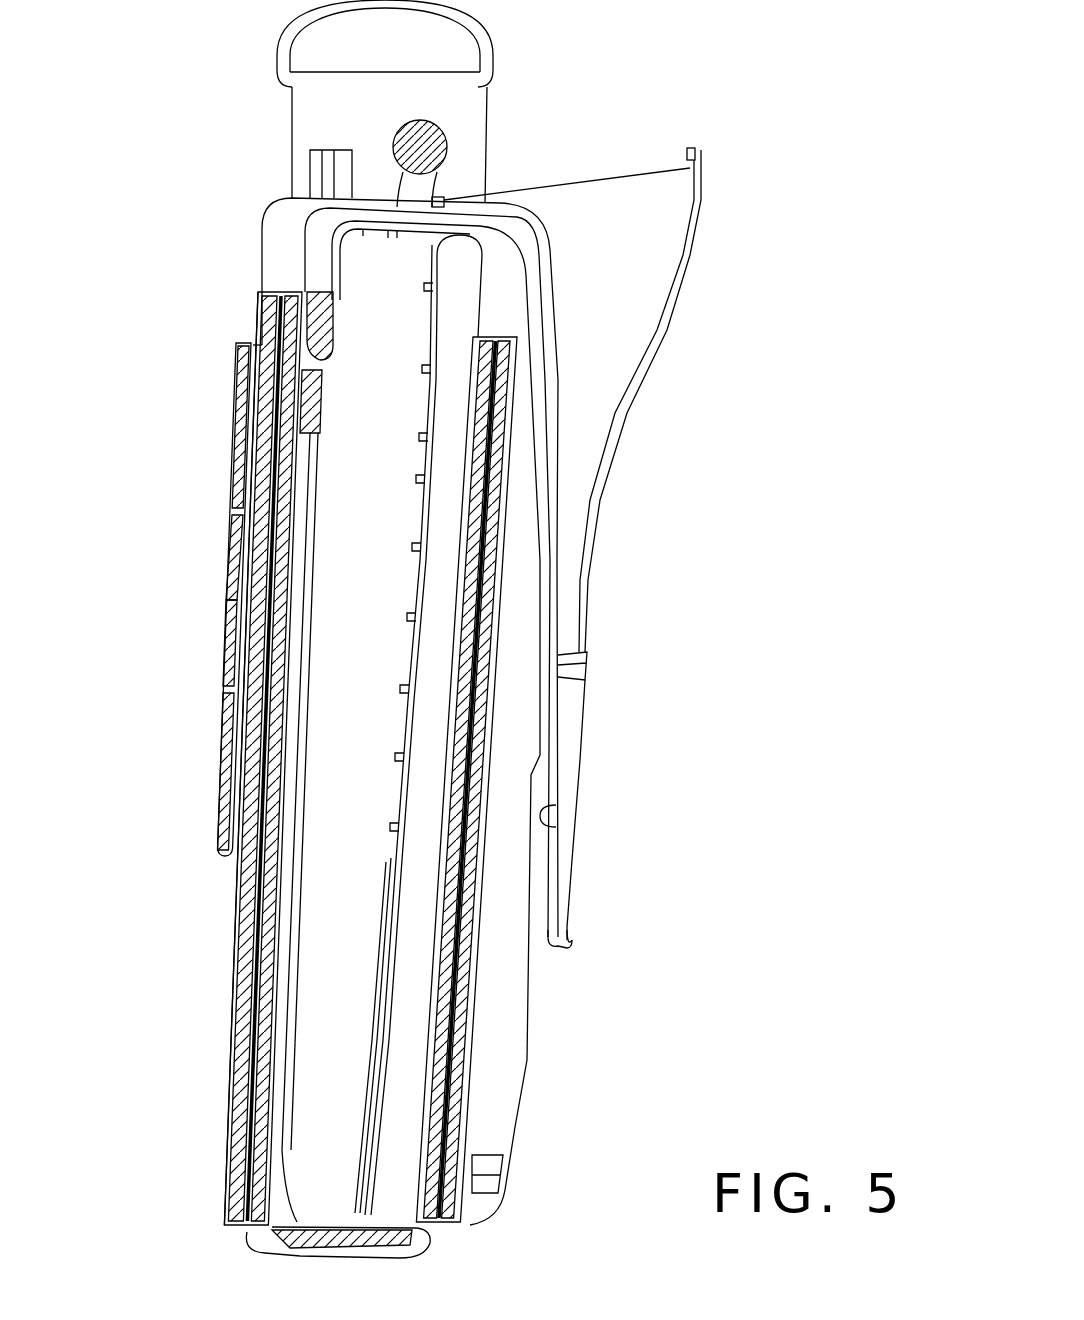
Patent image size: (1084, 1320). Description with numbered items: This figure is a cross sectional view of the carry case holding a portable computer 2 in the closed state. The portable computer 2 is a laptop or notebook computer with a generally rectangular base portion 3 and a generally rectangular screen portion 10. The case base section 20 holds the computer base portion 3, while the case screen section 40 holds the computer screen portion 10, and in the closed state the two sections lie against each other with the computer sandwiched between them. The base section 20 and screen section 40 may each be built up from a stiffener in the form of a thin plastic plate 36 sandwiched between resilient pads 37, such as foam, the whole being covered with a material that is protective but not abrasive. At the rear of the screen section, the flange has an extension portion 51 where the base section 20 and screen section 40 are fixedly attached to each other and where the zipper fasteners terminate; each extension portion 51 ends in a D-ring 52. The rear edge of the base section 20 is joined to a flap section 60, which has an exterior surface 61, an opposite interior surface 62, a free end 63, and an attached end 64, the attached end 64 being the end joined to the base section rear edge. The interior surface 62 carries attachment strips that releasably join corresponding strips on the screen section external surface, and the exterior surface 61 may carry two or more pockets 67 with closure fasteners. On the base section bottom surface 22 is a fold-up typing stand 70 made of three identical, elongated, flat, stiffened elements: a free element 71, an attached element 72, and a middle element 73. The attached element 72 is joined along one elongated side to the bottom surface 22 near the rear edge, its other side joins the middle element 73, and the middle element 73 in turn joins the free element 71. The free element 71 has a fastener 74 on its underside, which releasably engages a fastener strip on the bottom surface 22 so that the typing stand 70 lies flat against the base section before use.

The portable computer 2 is at (385, 645).
The base portion 3 is at (312, 884).
The screen portion 10 is at (420, 1038).
The base section 20 is at (240, 1230).
The bottom surface 22 is at (227, 987).
The thin plastic plate 36 is at (250, 1040).
The resilient pads 37 is at (250, 1142).
The screen section 40 is at (498, 1062).
The extension portion 51 is at (470, 150).
The D-ring 52 is at (493, 42).
The flap section 60 is at (580, 745).
The exterior surface 61 is at (585, 635).
The interior surface 62 is at (555, 823).
The free end 63 is at (565, 945).
The attached end 64 is at (288, 243).
The pockets 67 is at (605, 380).
The typing stand 70 is at (230, 558).
The free element 71 is at (220, 793).
The attached element 72 is at (236, 423).
The middle element 73 is at (230, 627).
The fastener 74 is at (237, 823).